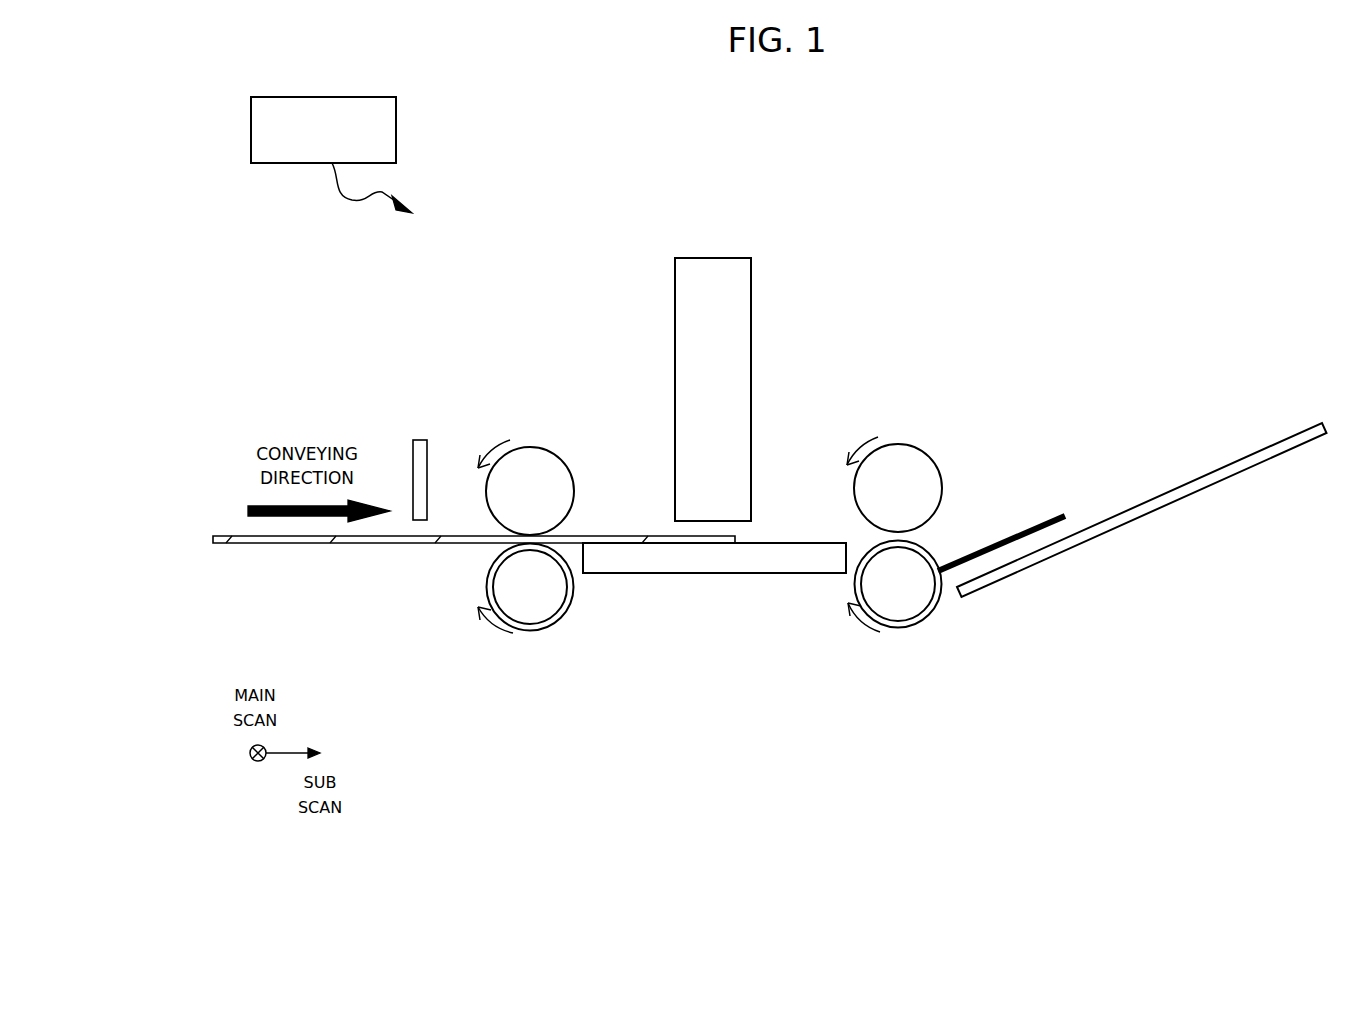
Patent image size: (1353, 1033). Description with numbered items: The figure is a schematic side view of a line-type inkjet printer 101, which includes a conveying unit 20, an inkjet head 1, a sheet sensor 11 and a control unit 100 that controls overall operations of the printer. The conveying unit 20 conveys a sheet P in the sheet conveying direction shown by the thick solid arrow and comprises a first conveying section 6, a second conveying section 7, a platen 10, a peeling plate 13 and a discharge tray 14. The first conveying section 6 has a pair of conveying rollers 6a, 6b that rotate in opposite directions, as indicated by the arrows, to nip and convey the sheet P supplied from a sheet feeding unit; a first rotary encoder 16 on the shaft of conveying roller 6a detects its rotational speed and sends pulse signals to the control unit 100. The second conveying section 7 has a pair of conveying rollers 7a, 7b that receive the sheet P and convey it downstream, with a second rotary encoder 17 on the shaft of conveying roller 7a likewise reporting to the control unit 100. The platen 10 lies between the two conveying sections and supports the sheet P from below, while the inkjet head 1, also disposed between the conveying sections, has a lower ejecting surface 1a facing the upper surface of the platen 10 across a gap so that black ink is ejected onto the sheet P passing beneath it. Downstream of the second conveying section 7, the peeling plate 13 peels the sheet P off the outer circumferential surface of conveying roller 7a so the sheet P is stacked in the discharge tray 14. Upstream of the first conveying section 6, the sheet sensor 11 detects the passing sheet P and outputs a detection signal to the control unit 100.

The control unit 100 is at (347, 97).
The inkjet printer 101 is at (1022, 248).
The inkjet head 1 is at (712, 258).
The ejecting surface 1a is at (735, 526).
The sheet sensor 11 is at (415, 450).
The sheet P is at (598, 535).
The platen 10 is at (714, 565).
The first conveying section 6 is at (541, 595).
The conveying roller 6a is at (532, 630).
The conveying roller 6b is at (530, 491).
The first rotary encoder 16 is at (558, 600).
The second conveying section 7 is at (910, 592).
The conveying roller 7a is at (898, 628).
The conveying roller 7b is at (898, 488).
The second rotary encoder 17 is at (927, 577).
The peeling plate 13 is at (1048, 514).
The discharge tray 14 is at (1283, 448).
The conveying unit 20 is at (863, 785).